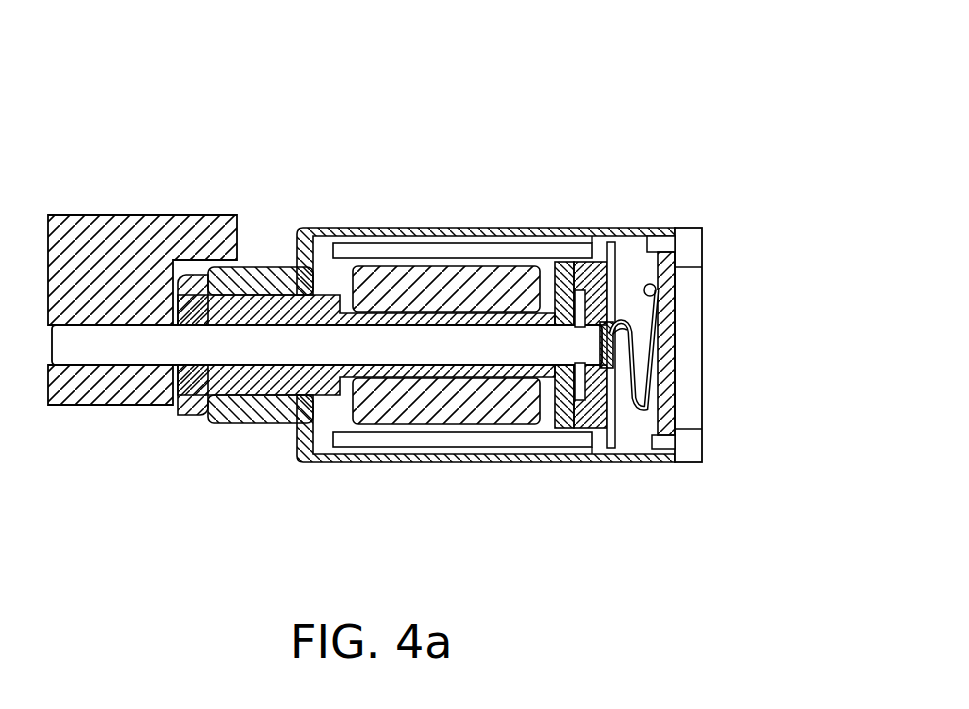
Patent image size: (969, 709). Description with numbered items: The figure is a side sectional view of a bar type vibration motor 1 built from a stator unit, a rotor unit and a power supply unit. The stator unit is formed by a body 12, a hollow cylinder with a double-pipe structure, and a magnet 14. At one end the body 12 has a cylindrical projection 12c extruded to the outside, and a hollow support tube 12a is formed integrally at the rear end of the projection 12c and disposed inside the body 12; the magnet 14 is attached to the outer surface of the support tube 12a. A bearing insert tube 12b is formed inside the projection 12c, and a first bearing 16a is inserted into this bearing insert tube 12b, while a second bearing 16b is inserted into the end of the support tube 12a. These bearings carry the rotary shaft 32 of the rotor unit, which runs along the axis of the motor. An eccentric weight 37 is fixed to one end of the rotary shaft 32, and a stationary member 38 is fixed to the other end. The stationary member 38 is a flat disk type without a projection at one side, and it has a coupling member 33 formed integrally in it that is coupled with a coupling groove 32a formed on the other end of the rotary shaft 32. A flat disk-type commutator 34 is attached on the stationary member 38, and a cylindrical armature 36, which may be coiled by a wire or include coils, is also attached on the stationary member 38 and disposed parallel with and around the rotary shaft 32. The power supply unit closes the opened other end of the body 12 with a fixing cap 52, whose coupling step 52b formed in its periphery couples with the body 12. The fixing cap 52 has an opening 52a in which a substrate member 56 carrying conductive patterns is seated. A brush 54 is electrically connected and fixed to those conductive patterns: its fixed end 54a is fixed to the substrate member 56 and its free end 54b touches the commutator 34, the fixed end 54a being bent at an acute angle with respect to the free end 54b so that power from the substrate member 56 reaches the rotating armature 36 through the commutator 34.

The bar type vibration motor 1 is at (203, 97).
The body 12 is at (397, 229).
The support tube 12a is at (405, 386).
The bearing insert tube 12b is at (273, 282).
The cylindrical projection 12c is at (212, 420).
The magnet 14 is at (490, 283).
The first bearing 16a is at (193, 407).
The second bearing 16b is at (560, 427).
The rotary shaft 32 is at (102, 347).
The coupling groove 32a is at (618, 367).
The coupling member 33 is at (565, 263).
The commutator 34 is at (605, 242).
The armature 36 is at (368, 250).
The eccentric weight 37 is at (92, 262).
The stationary member 38 is at (580, 402).
The fixing cap 52 is at (690, 355).
The opening 52a is at (634, 250).
The coupling step 52b is at (672, 228).
The brush 54 is at (636, 412).
The fixed end 54a is at (657, 289).
The free end 54b is at (615, 334).
The substrate member 56 is at (667, 449).